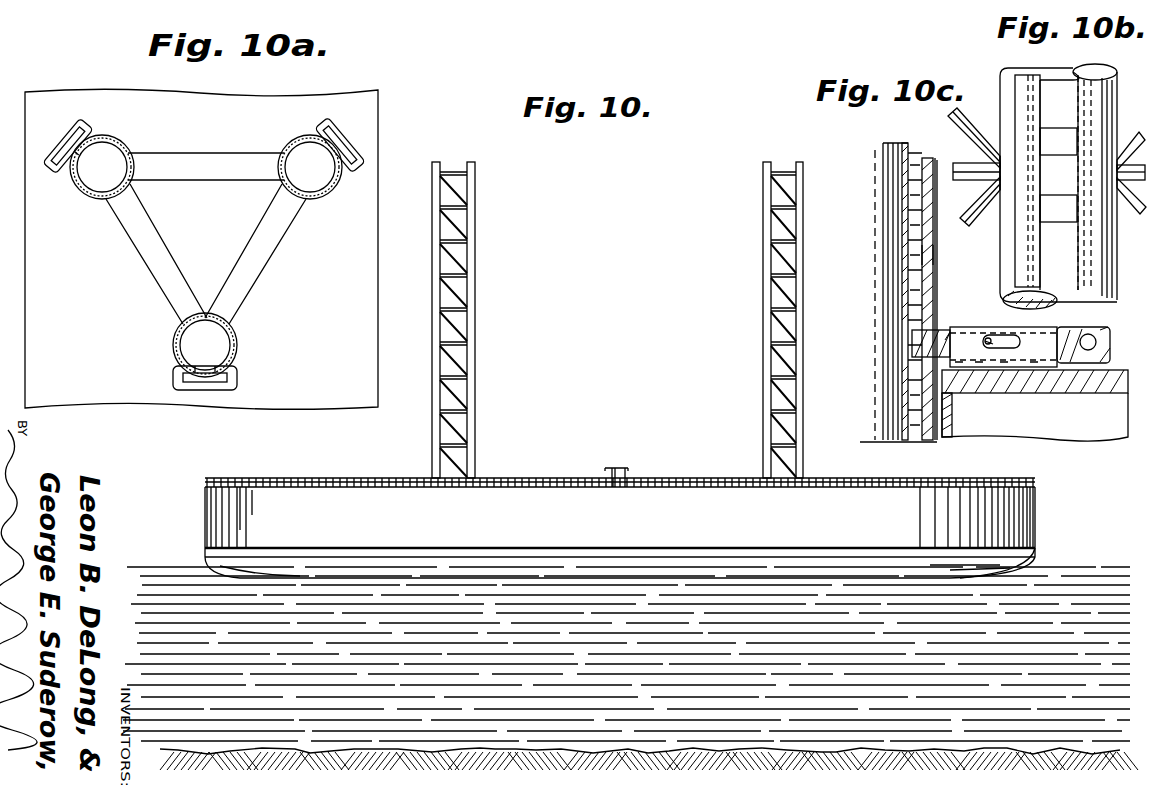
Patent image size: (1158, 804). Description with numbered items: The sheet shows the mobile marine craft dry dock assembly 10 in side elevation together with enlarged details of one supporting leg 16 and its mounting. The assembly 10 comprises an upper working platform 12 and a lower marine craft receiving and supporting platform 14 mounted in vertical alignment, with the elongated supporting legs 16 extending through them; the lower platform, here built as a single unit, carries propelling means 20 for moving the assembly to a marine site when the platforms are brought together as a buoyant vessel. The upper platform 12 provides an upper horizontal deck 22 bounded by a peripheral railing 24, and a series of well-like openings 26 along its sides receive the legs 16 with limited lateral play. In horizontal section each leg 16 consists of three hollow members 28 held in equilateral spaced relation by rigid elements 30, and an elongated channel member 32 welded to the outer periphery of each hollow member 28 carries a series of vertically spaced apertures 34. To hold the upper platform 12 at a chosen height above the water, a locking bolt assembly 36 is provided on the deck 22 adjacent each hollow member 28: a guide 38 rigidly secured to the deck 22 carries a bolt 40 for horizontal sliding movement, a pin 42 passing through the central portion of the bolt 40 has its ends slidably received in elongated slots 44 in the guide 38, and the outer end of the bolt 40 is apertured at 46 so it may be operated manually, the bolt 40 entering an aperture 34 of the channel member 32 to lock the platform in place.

In FIG. 10, the mobile marine craft dry dock assembly 10 is at (669, 452).
In FIG. 10, the upper working platform 12 is at (1038, 498).
In FIG. 10B, the upper working platform 12 is at (1054, 440).
In FIG. 10, the lower marine craft receiving and supporting platform 14 is at (1039, 552).
In FIG. 10A, the supporting leg 16 is at (356, 136).
In FIG. 10, the supporting leg 16 is at (483, 172).
In FIG. 10B, the supporting leg 16 is at (999, 86).
In FIG. 10C, the supporting leg 16 is at (864, 142).
In FIG. 10, the propelling means 20 is at (1046, 580).
In FIG. 10, the upper horizontal deck 22 is at (513, 480).
In FIG. 10B, the upper horizontal deck 22 is at (1022, 373).
In FIG. 10, the peripheral railing 24 is at (569, 481).
In FIG. 10A, the well-like opening 26 is at (78, 190).
In FIG. 10A, the hollow member 28 is at (103, 140).
In FIG. 10, the hollow member 28 is at (470, 298).
In FIG. 10B, the hollow member 28 is at (1010, 120).
In FIG. 10C, the hollow member 28 is at (934, 270).
In FIG. 10A, the rigid element 30 is at (220, 153).
In FIG. 10, the rigid element 30 is at (463, 388).
In FIG. 10B, the rigid element 30 is at (966, 172).
In FIG. 10A, the channel member 32 is at (72, 133).
In FIG. 10B, the channel member 32 is at (1057, 177).
In FIG. 10C, the channel member 32 is at (934, 236).
In FIG. 10B, the aperture 34 is at (1070, 130).
In FIG. 10C, the aperture 34 is at (934, 290).
In FIG. 10B, the locking bolt assembly 36 is at (1082, 330).
In FIG. 10B, the guide 38 is at (976, 336).
In FIG. 10C, the bolt 40 is at (912, 345).
In FIG. 10B, the pin 42 is at (1005, 318).
In FIG. 10B, the elongated slot 44 is at (992, 348).
In FIG. 10B, the aperture in bolt outer end 46 is at (1088, 351).